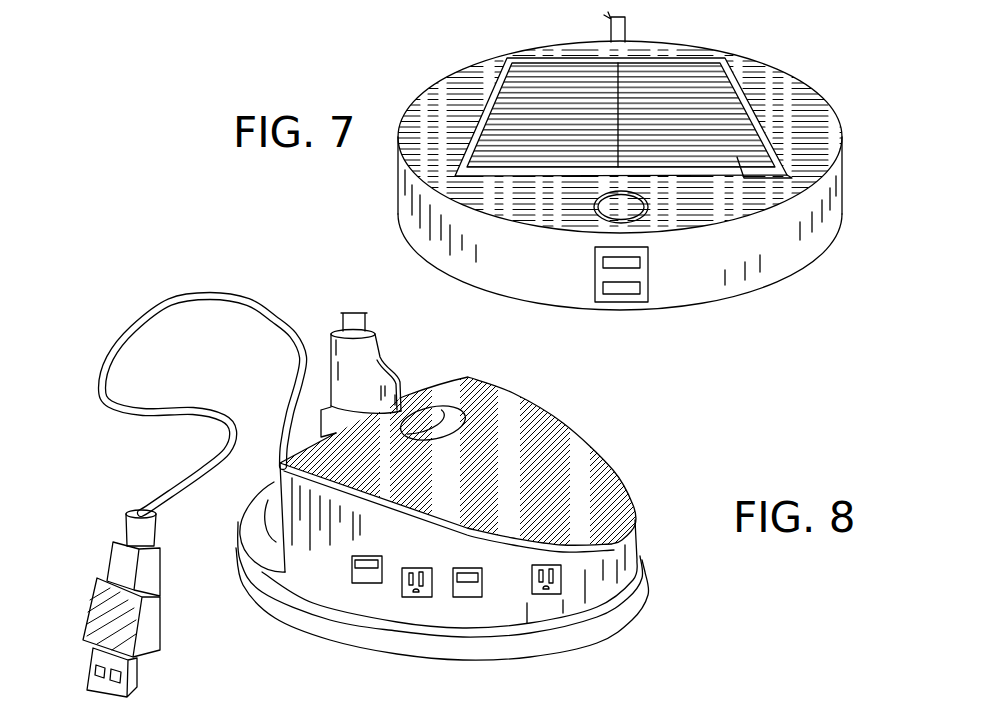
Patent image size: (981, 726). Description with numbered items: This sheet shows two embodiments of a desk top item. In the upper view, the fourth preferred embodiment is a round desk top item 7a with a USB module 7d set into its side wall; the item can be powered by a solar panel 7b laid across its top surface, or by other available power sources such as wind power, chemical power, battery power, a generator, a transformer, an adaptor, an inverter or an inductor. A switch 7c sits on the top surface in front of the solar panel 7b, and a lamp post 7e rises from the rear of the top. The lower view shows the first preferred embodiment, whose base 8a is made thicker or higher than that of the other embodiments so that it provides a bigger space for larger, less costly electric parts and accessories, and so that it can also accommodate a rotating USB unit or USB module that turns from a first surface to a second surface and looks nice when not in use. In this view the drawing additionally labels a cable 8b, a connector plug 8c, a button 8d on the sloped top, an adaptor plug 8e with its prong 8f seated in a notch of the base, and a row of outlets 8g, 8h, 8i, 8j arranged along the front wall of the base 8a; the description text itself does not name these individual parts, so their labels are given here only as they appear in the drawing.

In FIG. 7, the desk top item 7a is at (740, 272).
In FIG. 7, the solar panel 7b is at (738, 157).
In FIG. 7, the switch 7c is at (610, 212).
In FIG. 7, the USB module 7d is at (645, 272).
In FIG. 7, the lamp post 7e is at (618, 35).
In FIG. 8, the base unit housing 8a is at (302, 583).
In FIG. 8, the power cable 8b is at (157, 307).
In FIG. 8, the USB plug 8c is at (120, 558).
In FIG. 8, the button 8d is at (447, 418).
In FIG. 8, the plug adapter 8e is at (373, 369).
In FIG. 8, the adapter prong 8f is at (347, 318).
In FIG. 8, the USB outlet 8g is at (363, 578).
In FIG. 8, the AC outlet 8h is at (412, 595).
In FIG. 8, the USB outlet 8i is at (467, 592).
In FIG. 8, the AC outlet 8j is at (558, 585).